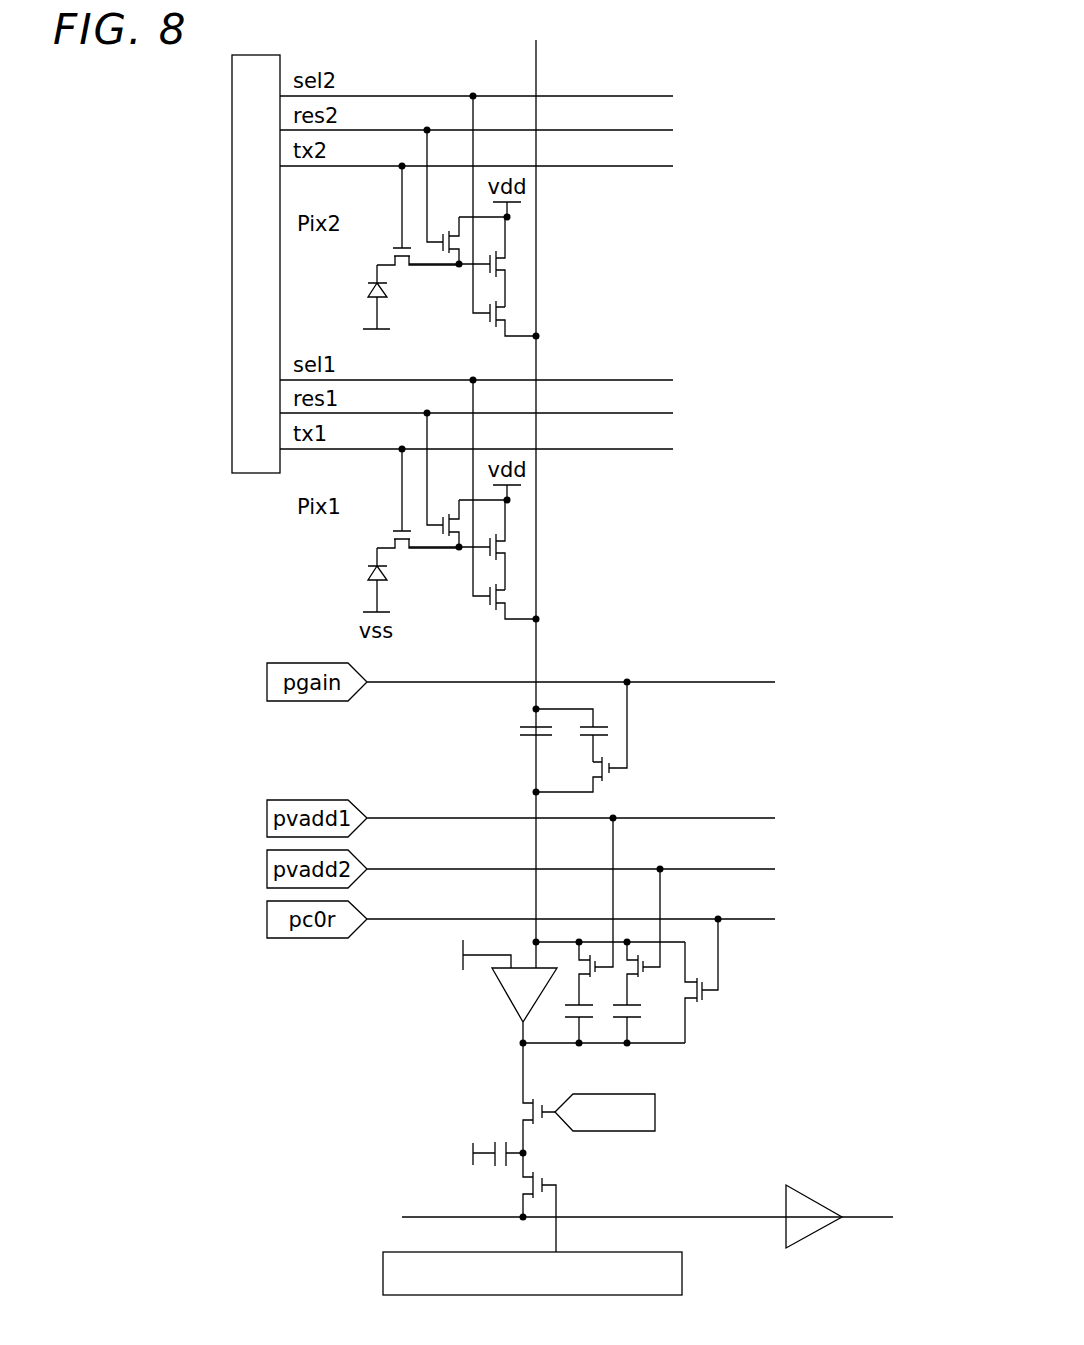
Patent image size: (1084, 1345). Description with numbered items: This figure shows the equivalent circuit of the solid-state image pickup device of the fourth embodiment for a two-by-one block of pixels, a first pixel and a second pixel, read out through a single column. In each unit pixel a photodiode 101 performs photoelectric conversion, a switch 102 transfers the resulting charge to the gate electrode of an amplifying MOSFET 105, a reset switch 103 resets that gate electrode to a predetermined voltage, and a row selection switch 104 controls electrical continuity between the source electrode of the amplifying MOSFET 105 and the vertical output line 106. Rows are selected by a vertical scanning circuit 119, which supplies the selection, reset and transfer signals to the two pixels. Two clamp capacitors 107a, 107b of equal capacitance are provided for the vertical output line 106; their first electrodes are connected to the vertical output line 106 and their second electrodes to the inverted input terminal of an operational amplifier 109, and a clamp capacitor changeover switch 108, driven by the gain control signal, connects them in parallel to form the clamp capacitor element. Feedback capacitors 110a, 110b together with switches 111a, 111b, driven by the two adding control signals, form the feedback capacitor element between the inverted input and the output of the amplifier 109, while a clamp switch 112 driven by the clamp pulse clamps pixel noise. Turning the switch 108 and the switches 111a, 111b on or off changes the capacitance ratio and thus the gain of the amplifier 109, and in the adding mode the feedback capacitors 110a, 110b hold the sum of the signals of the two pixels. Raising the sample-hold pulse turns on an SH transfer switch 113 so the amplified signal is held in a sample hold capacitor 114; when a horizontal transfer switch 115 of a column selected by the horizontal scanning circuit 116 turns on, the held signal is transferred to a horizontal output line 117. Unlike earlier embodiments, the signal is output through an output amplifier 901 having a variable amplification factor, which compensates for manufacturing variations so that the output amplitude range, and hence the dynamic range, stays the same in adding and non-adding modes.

The photodiode 101 is at (371, 290).
The switch 102 is at (403, 266).
The reset switch 103 is at (457, 243).
The row selection switch 104 is at (507, 313).
The amplifying MOSFET 105 is at (507, 268).
The vertical output line 106 is at (538, 536).
The clamp capacitor 107a is at (522, 723).
The clamp capacitor 107b is at (606, 722).
The clamp capacitor changeover switch 108 is at (595, 768).
The operational amplifier 109 is at (501, 1000).
The feedback capacitor 110a is at (568, 1020).
The feedback capacitor 110b is at (638, 1020).
The switch 111a is at (585, 978).
The switch 111b is at (643, 972).
The clamp switch 112 is at (703, 995).
The SH transfer switch 113 is at (528, 1110).
The sample hold capacitor 114 is at (507, 1160).
The horizontal transfer switch 115 is at (528, 1185).
The horizontal scanning circuit 116 is at (532, 1273).
The horizontal output line 117 is at (665, 1215).
The vertical scanning circuit 119 is at (256, 264).
The output amplifier 901 is at (818, 1206).